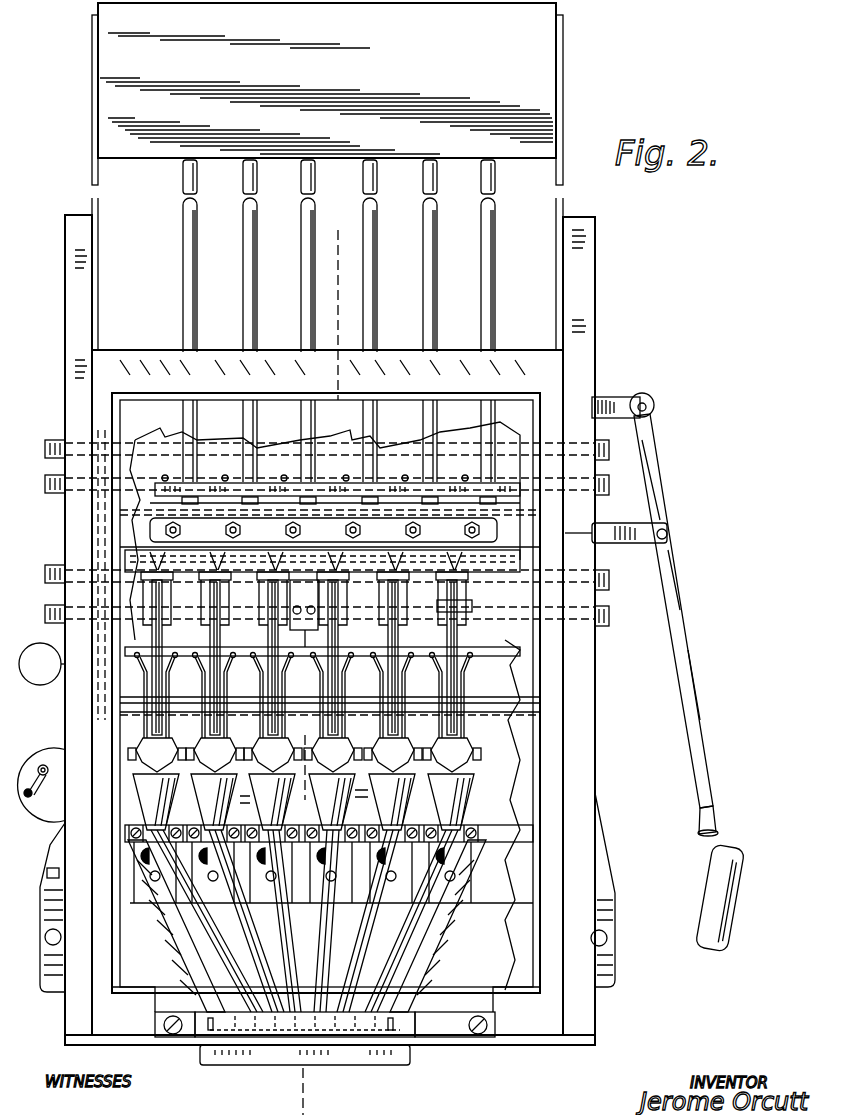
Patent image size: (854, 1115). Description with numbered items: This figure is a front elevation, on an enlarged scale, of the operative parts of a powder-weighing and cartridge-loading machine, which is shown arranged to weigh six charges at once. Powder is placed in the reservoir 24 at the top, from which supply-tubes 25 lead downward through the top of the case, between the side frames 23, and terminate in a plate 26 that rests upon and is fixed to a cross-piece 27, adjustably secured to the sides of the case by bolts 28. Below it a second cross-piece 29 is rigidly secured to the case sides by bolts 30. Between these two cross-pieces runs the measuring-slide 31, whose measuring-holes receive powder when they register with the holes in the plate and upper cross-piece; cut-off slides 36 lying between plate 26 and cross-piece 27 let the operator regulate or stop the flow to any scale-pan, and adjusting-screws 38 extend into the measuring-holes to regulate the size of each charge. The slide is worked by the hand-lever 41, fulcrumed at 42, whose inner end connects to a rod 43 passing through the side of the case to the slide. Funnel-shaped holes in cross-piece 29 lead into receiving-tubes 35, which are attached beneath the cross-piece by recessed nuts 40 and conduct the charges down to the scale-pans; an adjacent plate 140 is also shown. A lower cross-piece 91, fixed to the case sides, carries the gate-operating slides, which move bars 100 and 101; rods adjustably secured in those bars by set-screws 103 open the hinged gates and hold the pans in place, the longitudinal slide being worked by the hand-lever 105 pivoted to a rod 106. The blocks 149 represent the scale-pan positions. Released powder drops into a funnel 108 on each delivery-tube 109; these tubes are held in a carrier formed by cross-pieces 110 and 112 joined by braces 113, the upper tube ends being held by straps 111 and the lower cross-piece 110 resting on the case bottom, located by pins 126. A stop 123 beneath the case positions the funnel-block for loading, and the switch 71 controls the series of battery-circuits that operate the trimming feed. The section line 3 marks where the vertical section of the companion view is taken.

The reservoir 24 is at (327, 94).
The side frame 23 is at (75, 262).
The supply-tubes 25 is at (244, 262).
The section line 3 3 is at (320, 664).
The cross-piece 27 is at (150, 490).
The plate 26 is at (288, 484).
The cut-off slides 36 is at (250, 496).
The adjusting-screws 38 is at (323, 530).
The measuring-slide 31 is at (150, 542).
The cross-piece 29 is at (503, 560).
The recessed nuts 40 is at (285, 580).
The plate 140 is at (470, 585).
The receiving-tubes 35 is at (270, 590).
The rod 106 is at (185, 660).
The set-screws 103 is at (240, 665).
The bar 100 is at (360, 652).
The cross-piece 91 is at (498, 650).
The bar 101 is at (475, 715).
The blocks 149 is at (304, 713).
The funnel 108 is at (303, 802).
The straps 111 is at (335, 804).
The cross-piece 112 is at (528, 853).
The delivery-tube 109 is at (362, 930).
The braces 113 is at (160, 915).
The cross-piece 110 is at (390, 1035).
The pins 126 is at (212, 1045).
The stop 123 is at (362, 1066).
The bolts 28 is at (45, 452).
The bolts 30 is at (45, 574).
The hand-lever 105 is at (42, 664).
The switch 71 is at (41, 785).
The fulcrum 42 is at (650, 404).
The hand-lever 41 is at (690, 625).
The rod 43 is at (624, 544).